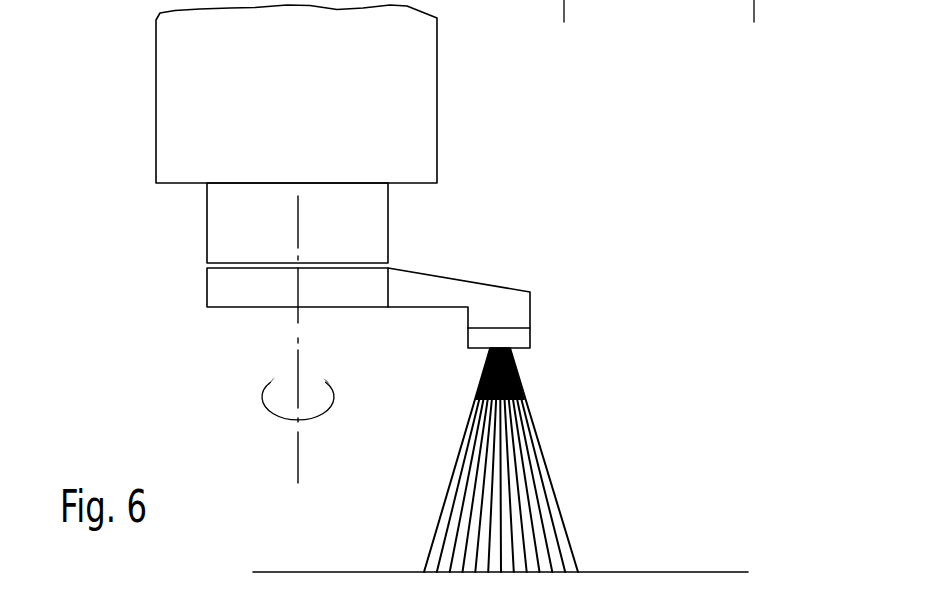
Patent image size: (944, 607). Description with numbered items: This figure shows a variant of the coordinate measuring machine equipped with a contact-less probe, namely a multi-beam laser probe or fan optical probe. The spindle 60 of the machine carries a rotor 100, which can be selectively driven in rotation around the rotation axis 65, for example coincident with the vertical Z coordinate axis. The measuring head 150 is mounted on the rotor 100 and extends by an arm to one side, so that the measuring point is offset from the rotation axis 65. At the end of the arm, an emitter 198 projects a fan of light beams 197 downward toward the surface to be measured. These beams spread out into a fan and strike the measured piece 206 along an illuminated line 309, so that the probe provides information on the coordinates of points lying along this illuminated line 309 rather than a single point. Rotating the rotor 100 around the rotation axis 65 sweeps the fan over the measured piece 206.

The spindle 60 is at (170, 135).
The rotor 100 is at (227, 233).
The measuring head 150 is at (235, 291).
The nozzle 198 is at (510, 336).
The spray 197 is at (527, 397).
The illuminated line 309 is at (567, 558).
The measured piece 206 is at (725, 570).
The rotation axis 65 is at (298, 465).